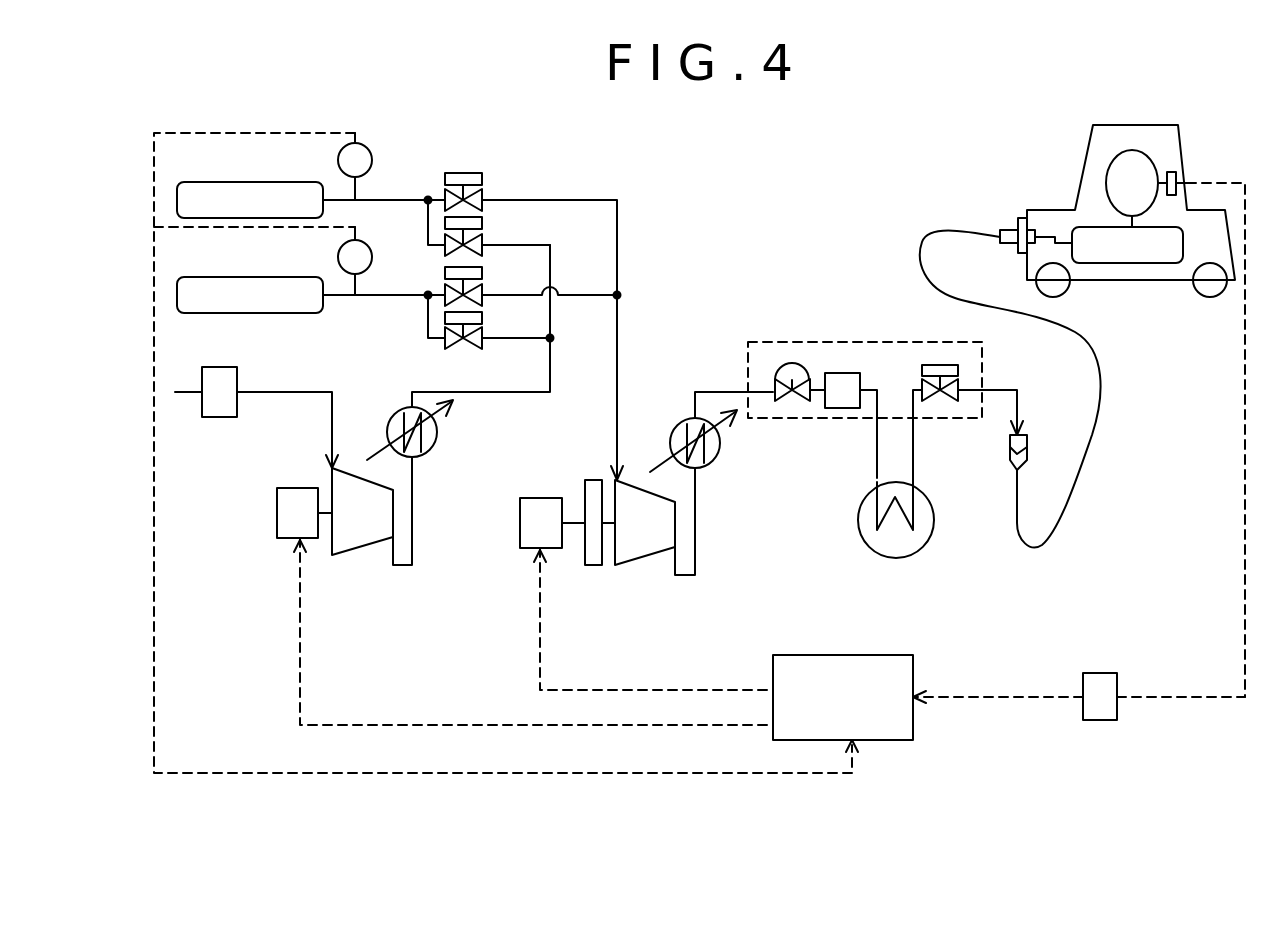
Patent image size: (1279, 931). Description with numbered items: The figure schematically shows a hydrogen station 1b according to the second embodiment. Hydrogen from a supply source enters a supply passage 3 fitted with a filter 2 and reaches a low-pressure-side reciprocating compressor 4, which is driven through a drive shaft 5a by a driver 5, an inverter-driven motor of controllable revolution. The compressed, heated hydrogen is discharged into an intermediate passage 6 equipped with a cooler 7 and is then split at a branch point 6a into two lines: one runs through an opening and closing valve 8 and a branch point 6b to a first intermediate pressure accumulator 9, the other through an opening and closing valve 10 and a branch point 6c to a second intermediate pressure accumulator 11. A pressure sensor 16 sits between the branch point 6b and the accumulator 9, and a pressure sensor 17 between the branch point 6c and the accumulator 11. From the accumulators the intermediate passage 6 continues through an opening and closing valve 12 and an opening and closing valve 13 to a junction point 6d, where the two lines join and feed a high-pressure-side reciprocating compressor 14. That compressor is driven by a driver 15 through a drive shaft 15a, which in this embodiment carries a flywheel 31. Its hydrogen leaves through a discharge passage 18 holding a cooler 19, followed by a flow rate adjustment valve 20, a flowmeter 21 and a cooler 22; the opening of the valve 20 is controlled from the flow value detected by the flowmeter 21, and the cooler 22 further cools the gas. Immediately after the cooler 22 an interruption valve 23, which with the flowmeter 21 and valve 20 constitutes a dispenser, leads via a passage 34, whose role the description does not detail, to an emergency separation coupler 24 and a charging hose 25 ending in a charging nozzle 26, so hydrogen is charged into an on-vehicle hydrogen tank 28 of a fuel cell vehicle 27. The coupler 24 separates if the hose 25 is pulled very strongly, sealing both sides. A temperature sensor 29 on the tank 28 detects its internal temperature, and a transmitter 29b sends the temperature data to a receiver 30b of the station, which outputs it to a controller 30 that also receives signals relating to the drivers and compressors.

The hydrogen station 1b is at (303, 100).
The filter 2 is at (220, 417).
The supply passage 3 is at (262, 392).
The low-pressure-side reciprocating compressor 4 is at (360, 545).
The driver 5 is at (280, 538).
The drive shaft 5a is at (327, 511).
The intermediate passage 6 is at (412, 565).
The branch point 6a is at (550, 338).
The branch point 6b is at (428, 295).
The branch point 6c is at (428, 200).
The junction point 6d is at (617, 295).
The cooler 7 is at (430, 455).
The opening and closing valve 8 is at (445, 345).
The first intermediate pressure accumulator 9 is at (235, 313).
The opening and closing valve 10 is at (482, 223).
The second intermediate pressure accumulator 11 is at (235, 218).
The opening and closing valve 12 is at (482, 268).
The opening and closing valve 13 is at (482, 176).
The high-pressure-side reciprocating compressor 14 is at (640, 560).
The driver 15 is at (520, 548).
The drive shaft 15a is at (575, 521).
The pressure sensor 16 is at (338, 255).
The pressure sensor 17 is at (338, 160).
The discharge passage 18 is at (700, 575).
The cooler 19 is at (718, 460).
The flow rate adjustment valve 20 is at (795, 365).
The flowmeter 21 is at (840, 373).
The cooler 22 is at (877, 548).
The interruption valve 23 is at (937, 365).
The emergency separation coupler 24 is at (1027, 435).
The charging hose 25 is at (1020, 535).
The charging nozzle 26 is at (1010, 230).
The fuel cell vehicle 27 is at (1150, 125).
The on-vehicle hydrogen tank 28 is at (1150, 263).
The temperature sensor 29 is at (1110, 160).
The transmitter 29b is at (1178, 172).
The controller 30 is at (913, 725).
The receiver 30b is at (1100, 722).
The flywheel 31 is at (592, 480).
The piping 34 is at (913, 457).